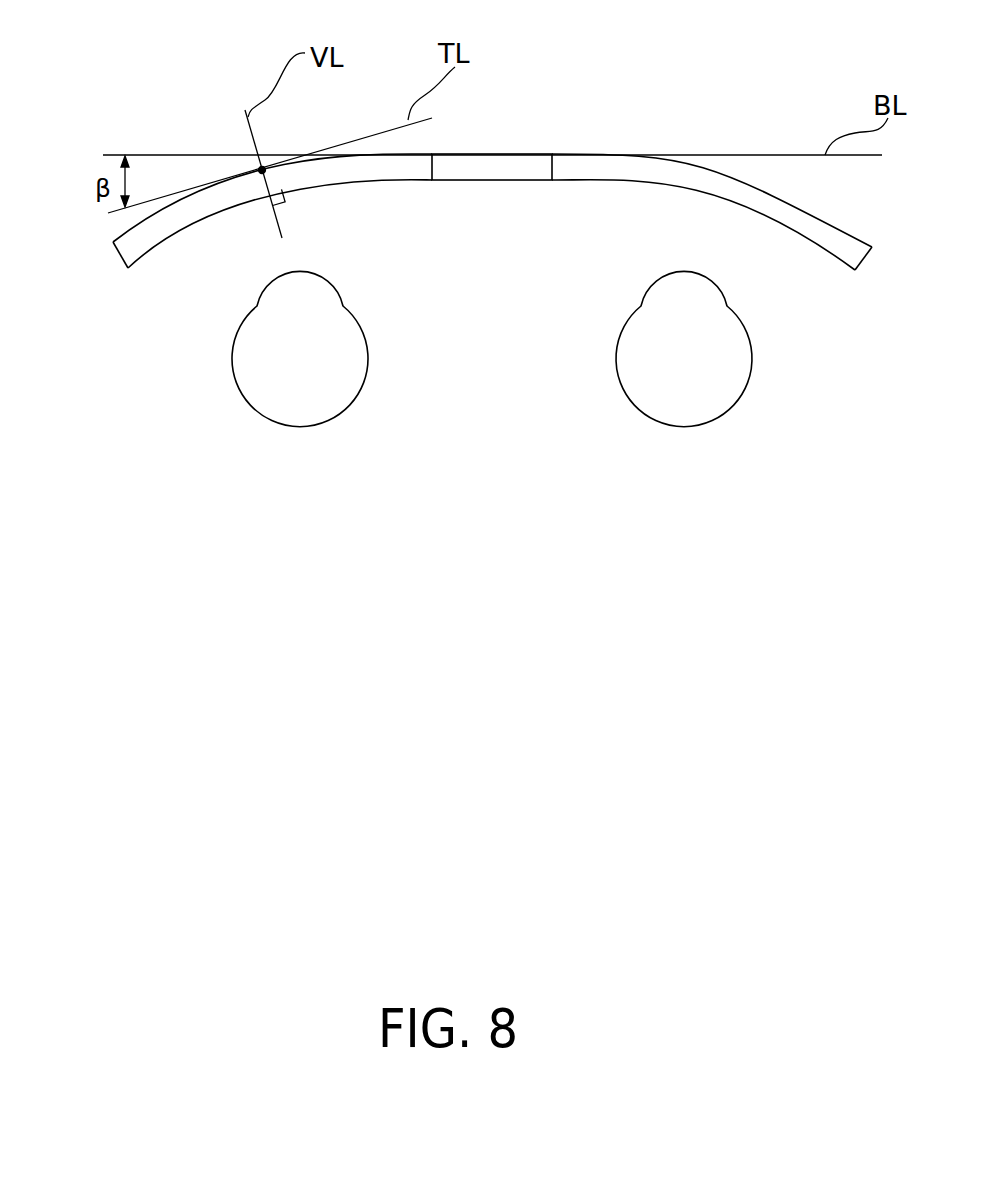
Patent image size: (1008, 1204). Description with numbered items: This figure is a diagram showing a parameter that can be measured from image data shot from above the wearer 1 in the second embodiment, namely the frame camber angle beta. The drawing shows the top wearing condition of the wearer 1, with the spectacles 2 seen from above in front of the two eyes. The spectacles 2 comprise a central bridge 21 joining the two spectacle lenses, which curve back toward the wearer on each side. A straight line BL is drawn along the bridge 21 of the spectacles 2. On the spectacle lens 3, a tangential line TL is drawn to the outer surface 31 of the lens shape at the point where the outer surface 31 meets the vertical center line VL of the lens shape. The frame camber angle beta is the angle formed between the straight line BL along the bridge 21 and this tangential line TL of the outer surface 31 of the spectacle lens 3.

The wearer 1 is at (295, 513).
The spectacles 2 is at (527, 121).
The spectacle lens 3 is at (587, 148).
The bridge 21 is at (503, 181).
The outer surface 31 is at (127, 228).